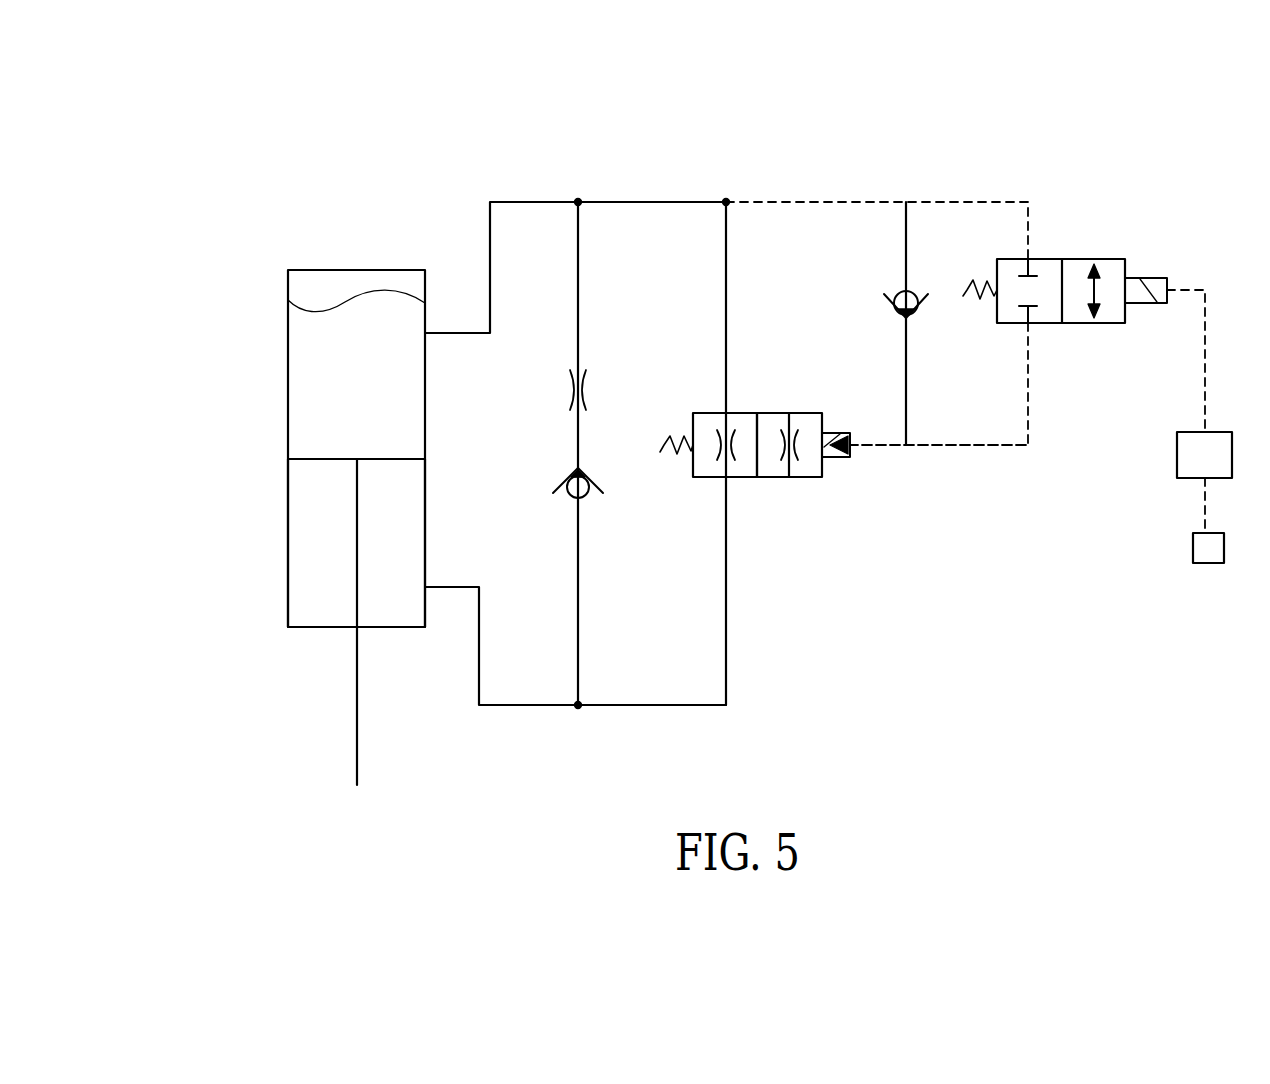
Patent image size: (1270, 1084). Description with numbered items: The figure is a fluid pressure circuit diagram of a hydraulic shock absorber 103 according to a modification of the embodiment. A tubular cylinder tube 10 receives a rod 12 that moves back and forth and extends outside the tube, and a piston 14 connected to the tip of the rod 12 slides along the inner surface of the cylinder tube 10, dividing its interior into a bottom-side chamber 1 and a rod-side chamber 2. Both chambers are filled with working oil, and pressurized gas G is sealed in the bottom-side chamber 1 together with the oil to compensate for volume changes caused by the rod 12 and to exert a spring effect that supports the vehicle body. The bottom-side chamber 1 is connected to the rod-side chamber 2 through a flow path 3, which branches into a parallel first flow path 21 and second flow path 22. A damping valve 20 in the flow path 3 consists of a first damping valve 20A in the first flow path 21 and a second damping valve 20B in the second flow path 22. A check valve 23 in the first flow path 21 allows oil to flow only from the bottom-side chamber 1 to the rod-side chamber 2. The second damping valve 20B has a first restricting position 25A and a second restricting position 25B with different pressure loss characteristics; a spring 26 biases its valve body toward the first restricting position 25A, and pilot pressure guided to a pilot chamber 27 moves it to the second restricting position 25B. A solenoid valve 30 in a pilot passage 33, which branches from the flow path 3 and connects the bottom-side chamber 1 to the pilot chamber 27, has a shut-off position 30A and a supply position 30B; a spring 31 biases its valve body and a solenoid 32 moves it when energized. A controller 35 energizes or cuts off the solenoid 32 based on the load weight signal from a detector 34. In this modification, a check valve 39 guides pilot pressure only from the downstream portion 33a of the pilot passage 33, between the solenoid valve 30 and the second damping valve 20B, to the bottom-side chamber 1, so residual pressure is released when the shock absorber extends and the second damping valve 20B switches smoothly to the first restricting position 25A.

The hydraulic shock absorber 103 is at (305, 225).
The bottom-side chamber 1 is at (325, 333).
The cylinder tube 10 is at (288, 380).
The pressurized gas G is at (376, 285).
The piston 14 is at (325, 460).
The rod-side chamber 2 is at (328, 548).
The rod 12 is at (357, 730).
The flow path 3 is at (530, 200).
The first flow path 21 is at (578, 274).
The second flow path 22 is at (726, 276).
The damping valve 20 is at (623, 389).
The first damping valve 20A is at (572, 400).
The second damping valve 20B is at (702, 403).
The first restricting position 25A is at (742, 413).
The second restricting position 25B is at (810, 413).
The spring 26 is at (662, 440).
The pilot chamber 27 is at (838, 433).
The check valve 23 is at (562, 484).
The pilot passage 33 is at (805, 200).
The downstream portion 33a is at (958, 447).
The check valve 39 is at (895, 298).
The solenoid valve 30 is at (1090, 337).
The shut-off position 30A is at (1052, 259).
The supply position 30B is at (1120, 259).
The spring 31 is at (975, 290).
The solenoid 32 is at (1150, 278).
The controller 35 is at (1177, 455).
The detector 34 is at (1193, 548).